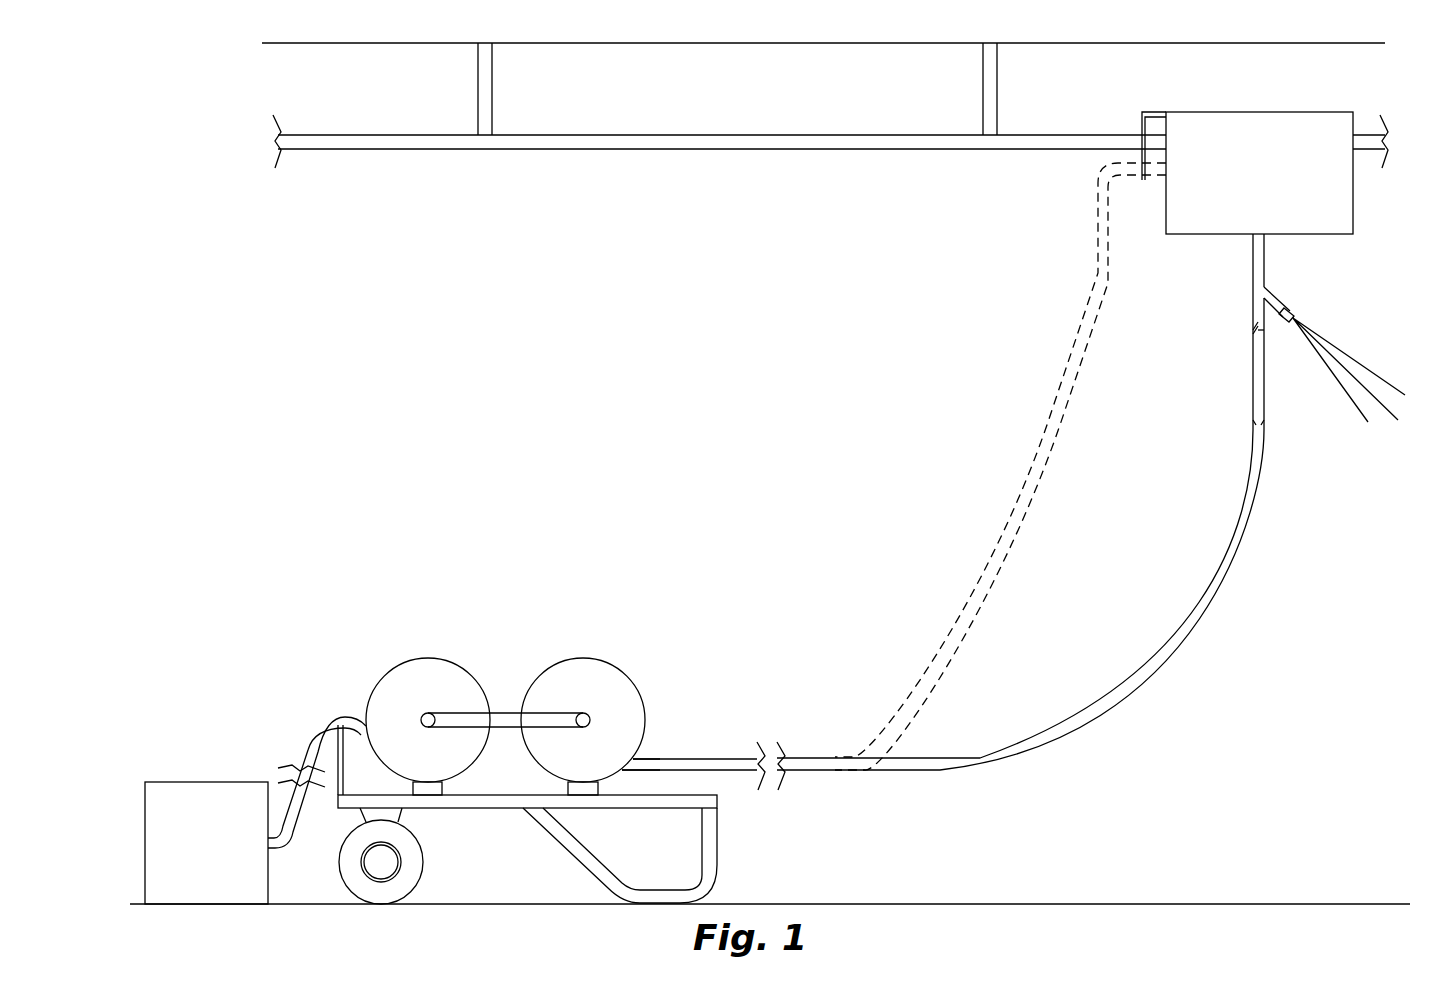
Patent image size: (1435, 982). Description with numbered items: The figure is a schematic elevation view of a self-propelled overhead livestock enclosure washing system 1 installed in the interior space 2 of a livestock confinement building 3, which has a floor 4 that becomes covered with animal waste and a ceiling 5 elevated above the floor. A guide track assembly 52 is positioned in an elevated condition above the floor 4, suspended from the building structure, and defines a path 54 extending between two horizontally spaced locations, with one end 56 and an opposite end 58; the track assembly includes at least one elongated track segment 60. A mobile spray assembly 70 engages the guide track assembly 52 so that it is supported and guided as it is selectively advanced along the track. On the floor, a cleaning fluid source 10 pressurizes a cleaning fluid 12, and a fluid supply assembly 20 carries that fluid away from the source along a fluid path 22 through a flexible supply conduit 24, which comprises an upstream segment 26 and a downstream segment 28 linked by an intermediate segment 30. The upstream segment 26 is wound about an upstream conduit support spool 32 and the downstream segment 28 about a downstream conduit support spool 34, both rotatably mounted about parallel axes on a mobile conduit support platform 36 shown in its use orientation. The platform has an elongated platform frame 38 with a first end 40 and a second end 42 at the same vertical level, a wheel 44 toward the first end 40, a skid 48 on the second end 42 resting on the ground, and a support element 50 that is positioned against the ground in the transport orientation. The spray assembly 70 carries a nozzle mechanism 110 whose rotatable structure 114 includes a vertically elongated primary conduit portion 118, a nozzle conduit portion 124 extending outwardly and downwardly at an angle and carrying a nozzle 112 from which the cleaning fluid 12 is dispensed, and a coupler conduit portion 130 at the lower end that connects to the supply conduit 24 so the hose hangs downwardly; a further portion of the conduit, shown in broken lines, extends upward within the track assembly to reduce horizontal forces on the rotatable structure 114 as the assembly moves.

The system 1 is at (1330, 98).
The interior space 2 is at (397, 438).
The livestock confinement building 3 is at (968, 912).
The floor 4 is at (990, 904).
The ceiling 5 is at (625, 45).
The cleaning fluid source 10 is at (195, 787).
The cleaning fluid 12 is at (1355, 405).
The fluid supply assembly 20 is at (615, 620).
The fluid path 22 is at (333, 720).
The supply conduit 24 is at (668, 759).
The upstream segment 26 is at (362, 727).
The downstream segment 28 is at (645, 757).
The intermediate segment 30 is at (503, 713).
The upstream conduit support spool 32 is at (425, 658).
The downstream conduit support spool 34 is at (617, 668).
The mobile conduit support platform 36 is at (727, 835).
The platform frame 38 is at (688, 805).
The first end 40 is at (330, 815).
The second end 42 is at (730, 815).
The wheel 44 is at (412, 865).
The skid 48 is at (710, 870).
The support element 50 is at (340, 752).
The guide track assembly 52 is at (605, 155).
The path 54 is at (797, 150).
The end 56 is at (289, 157).
The opposite end 58 is at (1377, 160).
The track segment 60 is at (935, 150).
The mobile spray assembly 70 is at (1343, 240).
The nozzle mechanism 110 is at (1247, 322).
The nozzle 112 is at (1295, 318).
The rotatable structure 114 is at (1258, 262).
The primary conduit portion 118 is at (1256, 323).
The nozzle conduit portion 124 is at (1268, 291).
The coupler conduit portion 130 is at (1263, 330).